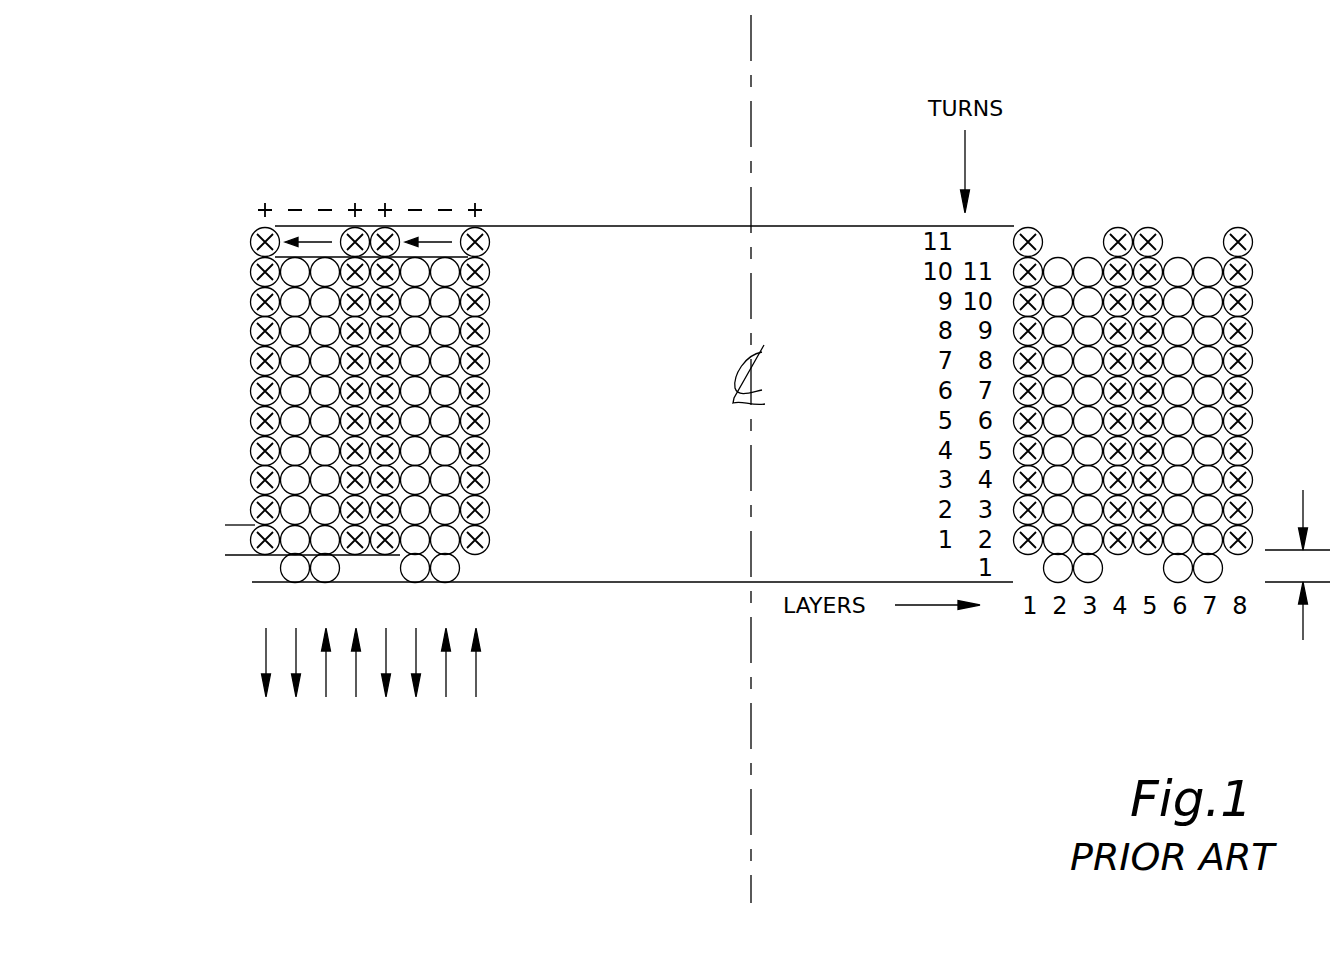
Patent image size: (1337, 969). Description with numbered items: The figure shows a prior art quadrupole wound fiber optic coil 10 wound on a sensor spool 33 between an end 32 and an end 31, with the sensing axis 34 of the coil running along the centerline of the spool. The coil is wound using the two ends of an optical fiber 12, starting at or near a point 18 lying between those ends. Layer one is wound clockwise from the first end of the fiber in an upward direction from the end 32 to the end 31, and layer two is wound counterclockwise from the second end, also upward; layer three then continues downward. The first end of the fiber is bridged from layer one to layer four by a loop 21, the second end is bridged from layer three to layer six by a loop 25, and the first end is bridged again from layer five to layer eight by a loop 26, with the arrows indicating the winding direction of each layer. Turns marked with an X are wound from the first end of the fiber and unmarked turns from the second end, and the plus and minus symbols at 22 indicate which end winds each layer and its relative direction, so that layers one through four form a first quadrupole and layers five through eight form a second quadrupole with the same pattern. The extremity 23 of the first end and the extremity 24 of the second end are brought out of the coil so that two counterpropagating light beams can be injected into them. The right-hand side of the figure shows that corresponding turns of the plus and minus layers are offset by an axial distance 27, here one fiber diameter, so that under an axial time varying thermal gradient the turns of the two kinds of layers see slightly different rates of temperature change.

The quadrupole wound fiber optic coil 10 is at (810, 200).
The optical fiber 12 is at (1058, 258).
The point 18 is at (478, 582).
The loop 21 is at (450, 237).
The plus and minus symbols 22 is at (248, 222).
The extremity of the first end 23 is at (237, 540).
The extremity of the second end 24 is at (258, 567).
The loop 25 is at (377, 568).
The loop 26 is at (330, 237).
The axial distance 27 is at (1297, 549).
The end of the sensor spool 31 is at (652, 210).
The end of the sensor spool 32 is at (652, 626).
The sensor spool 33 is at (604, 409).
The sensing axis 34 is at (752, 787).